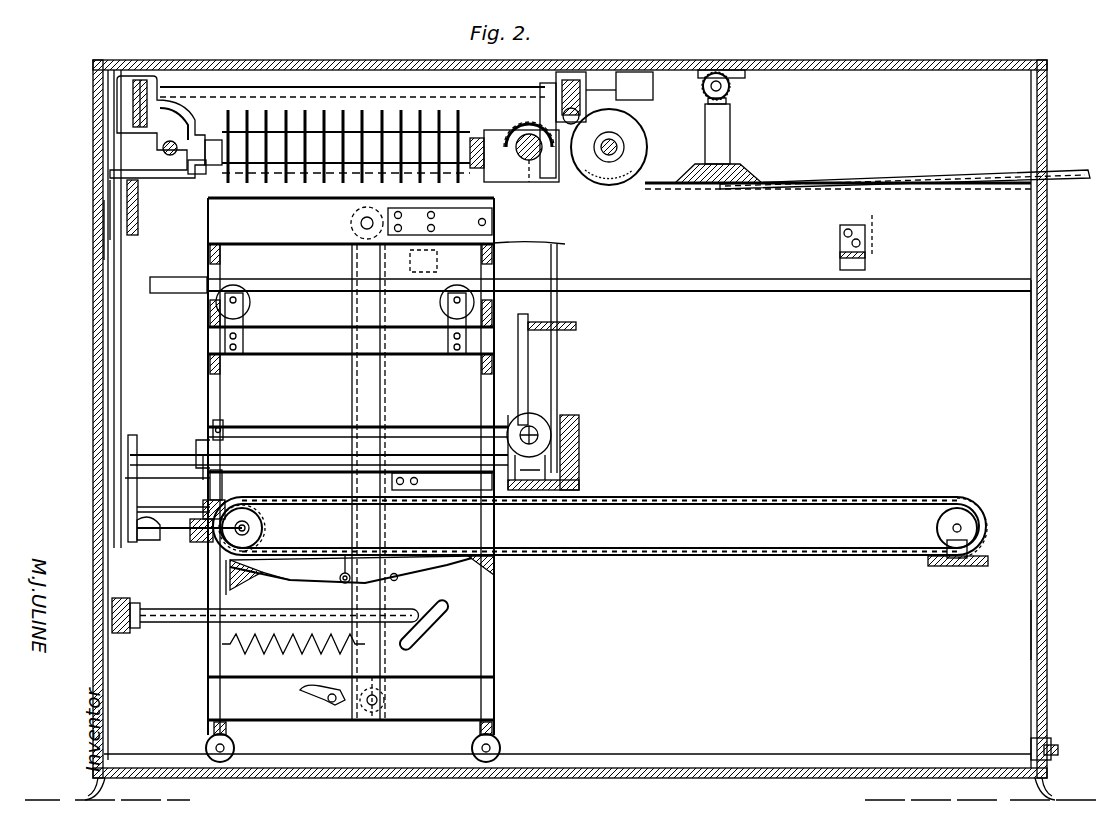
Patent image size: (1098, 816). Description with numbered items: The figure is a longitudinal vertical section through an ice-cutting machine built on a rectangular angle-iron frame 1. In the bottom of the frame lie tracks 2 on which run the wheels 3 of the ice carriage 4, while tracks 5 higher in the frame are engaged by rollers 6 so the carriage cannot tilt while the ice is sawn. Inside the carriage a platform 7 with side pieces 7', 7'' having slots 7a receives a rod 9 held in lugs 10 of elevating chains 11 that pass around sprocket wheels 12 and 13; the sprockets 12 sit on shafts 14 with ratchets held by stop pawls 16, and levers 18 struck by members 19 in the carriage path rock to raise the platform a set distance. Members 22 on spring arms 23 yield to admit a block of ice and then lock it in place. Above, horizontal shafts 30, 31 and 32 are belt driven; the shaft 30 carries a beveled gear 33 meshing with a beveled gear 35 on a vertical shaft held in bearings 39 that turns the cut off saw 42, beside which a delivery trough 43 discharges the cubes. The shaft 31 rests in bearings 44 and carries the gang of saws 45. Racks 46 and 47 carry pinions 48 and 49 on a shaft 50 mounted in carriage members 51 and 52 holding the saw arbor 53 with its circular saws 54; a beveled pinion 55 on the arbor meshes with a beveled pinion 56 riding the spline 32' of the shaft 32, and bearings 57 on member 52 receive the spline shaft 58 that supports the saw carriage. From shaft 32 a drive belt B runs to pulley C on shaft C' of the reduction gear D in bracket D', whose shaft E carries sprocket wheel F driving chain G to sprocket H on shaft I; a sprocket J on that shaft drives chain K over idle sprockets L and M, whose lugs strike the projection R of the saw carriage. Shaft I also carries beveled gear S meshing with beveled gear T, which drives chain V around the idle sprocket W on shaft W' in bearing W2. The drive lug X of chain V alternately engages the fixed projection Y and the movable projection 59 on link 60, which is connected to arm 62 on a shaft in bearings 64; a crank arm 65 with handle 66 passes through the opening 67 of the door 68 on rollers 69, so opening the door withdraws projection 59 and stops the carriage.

The frame 1 is at (98, 316).
The tracks 2 is at (757, 762).
The wheels 3 is at (206, 748).
The ice carriage 4 is at (358, 466).
The tracks 5 is at (704, 288).
The rollers 6 is at (240, 289).
The platform 7 is at (376, 588).
The side pieces 7' is at (220, 571).
The side pieces 7'' is at (267, 589).
The slots 7a is at (396, 572).
The rod 9 is at (340, 579).
The lugs 10 is at (344, 570).
The elevating chains 11 is at (385, 388).
The sprocket wheels 12 is at (386, 700).
The sprocket wheels 13 is at (350, 223).
The shafts 14 is at (372, 712).
The stop pawls 16 is at (341, 702).
The levers 18 is at (414, 638).
The members 19 is at (172, 608).
The members 22 is at (500, 243).
The spring arms 23 is at (434, 484).
The shaft 30 is at (742, 72).
The shaft 31 is at (647, 158).
The shaft 32 is at (522, 175).
The spline 32' is at (551, 202).
The beveled gear 33 is at (730, 86).
The beveled gear 35 is at (727, 104).
The bearings 39 is at (730, 130).
The cut off saw 42 is at (672, 190).
The delivery trough 43 is at (975, 171).
The bearings 44 is at (620, 92).
The saws 45 is at (622, 140).
The rack 46 is at (580, 133).
The rack 47 is at (140, 118).
The pinion 48 is at (575, 78).
The pinion 49 is at (150, 91).
The shaft 50 is at (332, 96).
The carriage member 51 is at (548, 115).
The carriage member 52 is at (140, 140).
The saw arbor 53 is at (222, 140).
The circular saws 54 is at (266, 110).
The beveled pinion 55 is at (500, 131).
The beveled pinion 56 is at (522, 133).
The bearings 57 is at (205, 172).
The spline shaft 58 is at (163, 152).
The movable projection 59 is at (214, 512).
The link 60 is at (210, 481).
The arm 62 is at (198, 445).
The bearings 64 is at (220, 430).
The crank arm 65 is at (530, 357).
The handle 66 is at (578, 326).
The opening 67 is at (1031, 322).
The door 68 is at (1031, 633).
The rollers 69 is at (1040, 742).
The drive belt B is at (557, 348).
The pulley C is at (560, 418).
The shaft C' is at (579, 423).
The reduction gear D is at (571, 452).
The bracket D' is at (576, 479).
The shaft E is at (296, 464).
The sprocket wheel F is at (128, 447).
The drive chain G is at (125, 478).
The sprocket H is at (179, 558).
The shaft I is at (137, 508).
The sprocket J is at (137, 528).
The drive sprocket chain K is at (121, 318).
The idle sprocket L is at (121, 256).
The idle sprocket M is at (110, 205).
The projection R is at (105, 240).
The beveled gear S is at (205, 542).
The beveled gear T is at (246, 516).
The drive sprocket chain V is at (265, 528).
The idle sprocket W is at (926, 528).
The shaft W' is at (969, 513).
The bearing W2 is at (962, 566).
The drive lug X is at (215, 582).
The fixed projection Y is at (486, 562).